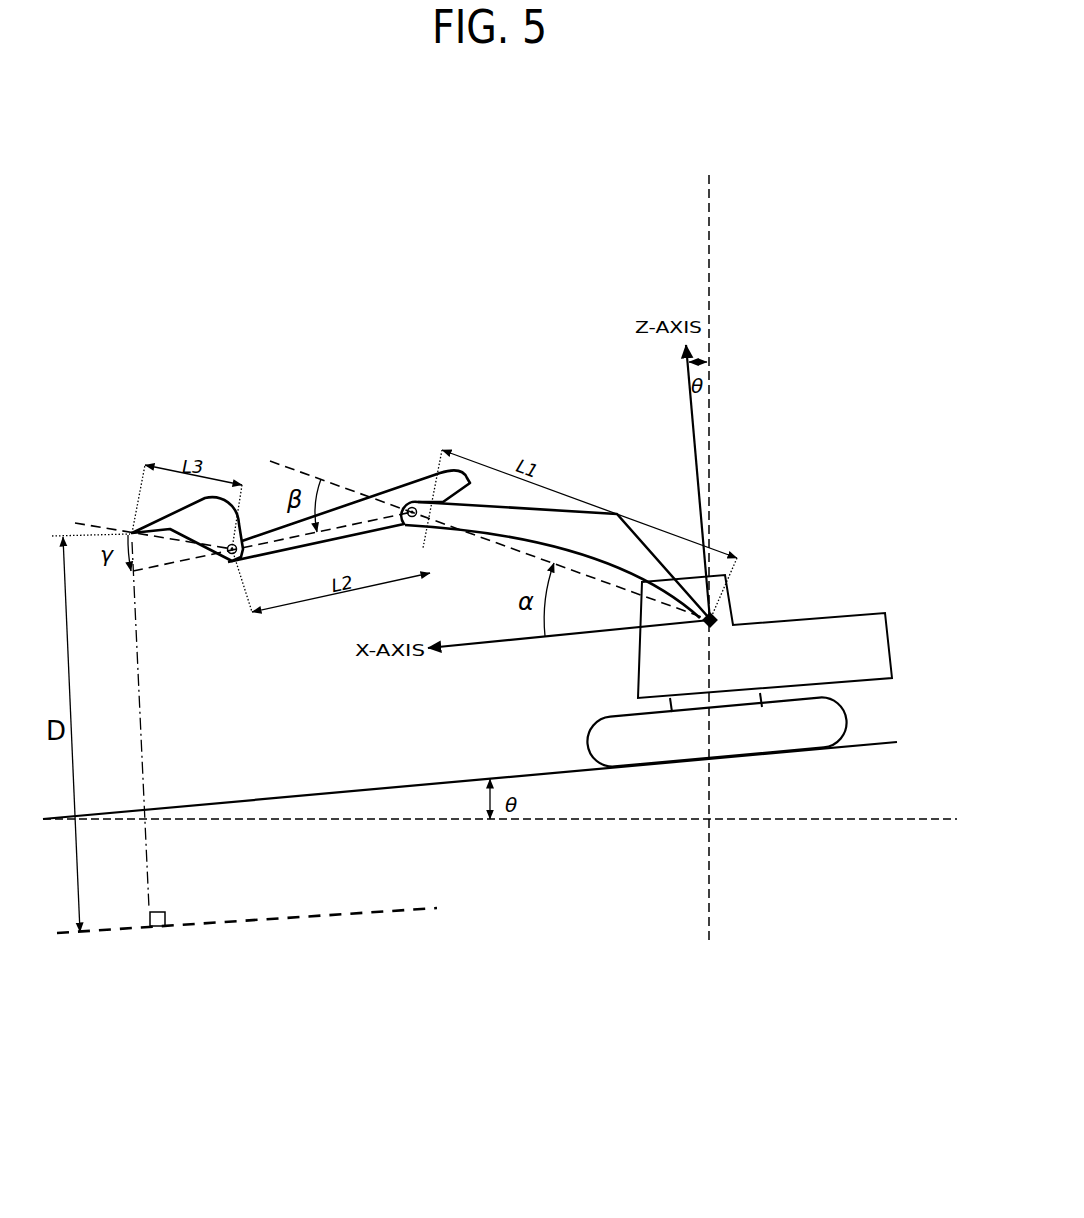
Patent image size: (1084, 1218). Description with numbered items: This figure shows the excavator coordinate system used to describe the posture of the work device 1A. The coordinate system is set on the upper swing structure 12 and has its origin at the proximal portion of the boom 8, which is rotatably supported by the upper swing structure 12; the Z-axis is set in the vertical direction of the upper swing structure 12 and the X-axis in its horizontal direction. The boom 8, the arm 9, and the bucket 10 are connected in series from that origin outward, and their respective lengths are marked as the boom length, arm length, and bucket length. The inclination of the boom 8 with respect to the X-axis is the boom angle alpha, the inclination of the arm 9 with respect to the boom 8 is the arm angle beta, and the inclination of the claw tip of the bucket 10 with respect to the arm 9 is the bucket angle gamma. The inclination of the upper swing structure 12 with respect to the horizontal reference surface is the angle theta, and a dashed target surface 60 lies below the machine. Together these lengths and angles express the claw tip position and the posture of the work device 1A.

The work device 1A is at (521, 420).
The boom 8 is at (620, 516).
The arm 9 is at (403, 484).
The bucket 10 is at (203, 545).
The upper swing structure 12 is at (864, 612).
The design surface 60 is at (265, 918).